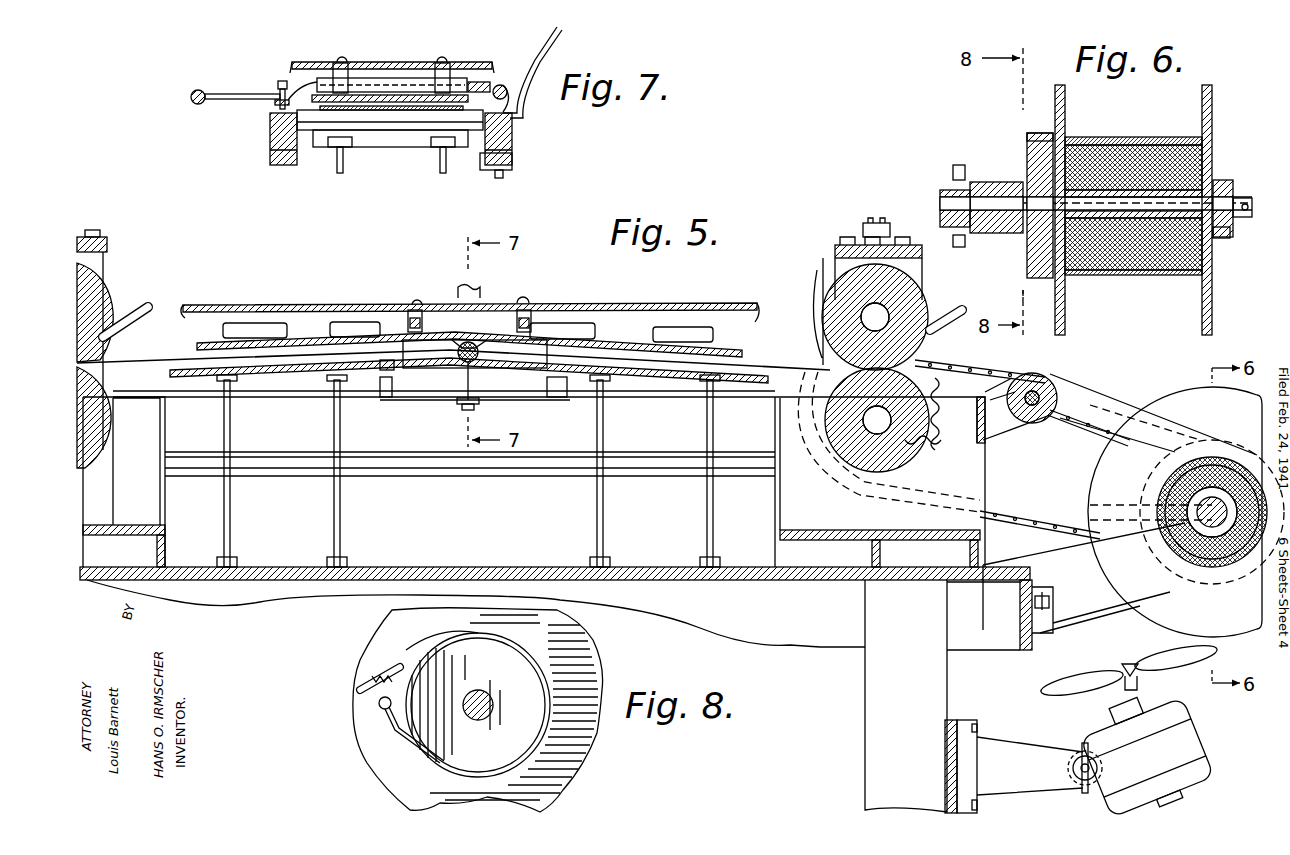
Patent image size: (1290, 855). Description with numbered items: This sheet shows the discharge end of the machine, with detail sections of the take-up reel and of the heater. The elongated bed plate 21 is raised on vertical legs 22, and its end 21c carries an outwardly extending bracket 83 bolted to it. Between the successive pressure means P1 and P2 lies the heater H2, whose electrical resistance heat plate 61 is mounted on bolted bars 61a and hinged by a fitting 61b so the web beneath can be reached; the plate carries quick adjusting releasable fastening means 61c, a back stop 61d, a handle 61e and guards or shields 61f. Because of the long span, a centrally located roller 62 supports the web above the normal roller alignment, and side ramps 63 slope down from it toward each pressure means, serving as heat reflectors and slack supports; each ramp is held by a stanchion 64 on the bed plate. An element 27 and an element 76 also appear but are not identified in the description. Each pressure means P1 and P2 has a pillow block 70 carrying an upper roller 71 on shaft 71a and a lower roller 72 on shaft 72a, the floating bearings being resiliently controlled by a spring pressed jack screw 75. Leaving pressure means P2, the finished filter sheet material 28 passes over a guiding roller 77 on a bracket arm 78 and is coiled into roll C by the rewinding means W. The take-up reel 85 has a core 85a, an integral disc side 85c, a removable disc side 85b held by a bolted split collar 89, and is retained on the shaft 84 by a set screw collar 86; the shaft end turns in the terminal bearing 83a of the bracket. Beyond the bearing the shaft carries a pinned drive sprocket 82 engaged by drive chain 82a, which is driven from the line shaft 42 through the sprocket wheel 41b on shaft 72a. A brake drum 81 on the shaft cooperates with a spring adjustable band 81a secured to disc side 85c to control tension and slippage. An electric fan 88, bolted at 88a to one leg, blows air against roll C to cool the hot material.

In FIG. 5, the bed plate 21 is at (196, 567).
In FIG. 5, the end of the bed plate 21c is at (1009, 590).
In FIG. 5, the vertical supports or legs 22 is at (885, 694).
In FIG. 7, the table plate 27 is at (328, 113).
In FIG. 5, the table plate 27 is at (765, 368).
In FIG. 6, the filter sheet material 28 is at (1138, 137).
In FIG. 5, the filter sheet material 28 is at (1085, 390).
In FIG. 5, the sprocket wheel 41b is at (947, 366).
In FIG. 5, the line shaft 42 is at (508, 468).
In FIG. 7, the heat plate 61 is at (370, 80).
In FIG. 5, the heat plate 61 is at (240, 323).
In FIG. 5, the bolted bars 61a is at (418, 400).
In FIG. 7, the hinge fitting 61b is at (505, 80).
In FIG. 5, the hinge fitting 61b is at (390, 300).
In FIG. 7, the quick adjusting releasable fastening means 61c is at (276, 78).
In FIG. 7, the back stop 61d is at (530, 95).
In FIG. 5, the back stop 61d is at (483, 291).
In FIG. 7, the handle 61e is at (200, 105).
In FIG. 7, the guards or shields 61f is at (420, 62).
In FIG. 5, the guards or shields 61f is at (355, 305).
In FIG. 7, the roller 62 is at (380, 125).
In FIG. 5, the roller 62 is at (480, 412).
In FIG. 7, the side ramps 63 is at (413, 140).
In FIG. 5, the side ramps 63 is at (282, 378).
In FIG. 7, the stanchion 64 is at (340, 172).
In FIG. 5, the stanchion 64 is at (332, 545).
In FIG. 5, the pillow block 70 is at (130, 512).
In FIG. 5, the upper roller 71 is at (100, 290).
In FIG. 5, the upper roller shaft 71a is at (926, 275).
In FIG. 5, the lower roller 72 is at (108, 450).
In FIG. 5, the lower roller shaft 72a is at (868, 470).
In FIG. 5, the jack screw 75 is at (873, 222).
In FIG. 5, the pin 76 is at (130, 305).
In FIG. 5, the guiding roller 77 is at (1042, 378).
In FIG. 5, the bracket arm 78 is at (1003, 438).
In FIG. 6, the brake drum 81 is at (1027, 150).
In FIG. 8, the brake drum 81 is at (418, 663).
In FIG. 6, the spring adjustable band 81a is at (1035, 133).
In FIG. 8, the spring adjustable band 81a is at (548, 740).
In FIG. 6, the drive sprocket 82 is at (945, 180).
In FIG. 5, the drive sprocket 82 is at (1140, 504).
In FIG. 6, the drive chain 82a is at (955, 166).
In FIG. 5, the drive chain 82a is at (1070, 428).
In FIG. 5, the bracket 83 is at (1067, 603).
In FIG. 6, the terminal bearing 83a is at (977, 192).
In FIG. 6, the shaft 84 is at (1182, 208).
In FIG. 5, the shaft 84 is at (1212, 528).
In FIG. 8, the shaft 84 is at (480, 722).
In FIG. 5, the take-up reel 85 is at (1084, 488).
In FIG. 8, the take-up reel 85 is at (366, 646).
In FIG. 6, the core 85a is at (1185, 228).
In FIG. 5, the core 85a is at (1195, 500).
In FIG. 6, the removable disc side 85b is at (1212, 315).
In FIG. 6, the disc side 85c is at (1066, 100).
In FIG. 5, the disc side 85c is at (1162, 612).
In FIG. 8, the disc side 85c is at (590, 680).
In FIG. 6, the set screw collar 86 is at (1243, 218).
In FIG. 5, the electric fan 88 is at (1129, 732).
In FIG. 5, the fan bolting 88a is at (980, 740).
In FIG. 6, the bolted split collar 89 is at (1225, 182).
In FIG. 5, the pressure means P1 is at (118, 262).
In FIG. 5, the pressure means P2 is at (810, 278).
In FIG. 5, the heater H2 is at (575, 290).
In FIG. 6, the roll C is at (1140, 270).
In FIG. 5, the roll C is at (1180, 568).
In FIG. 6, the rewinding means W is at (1154, 331).